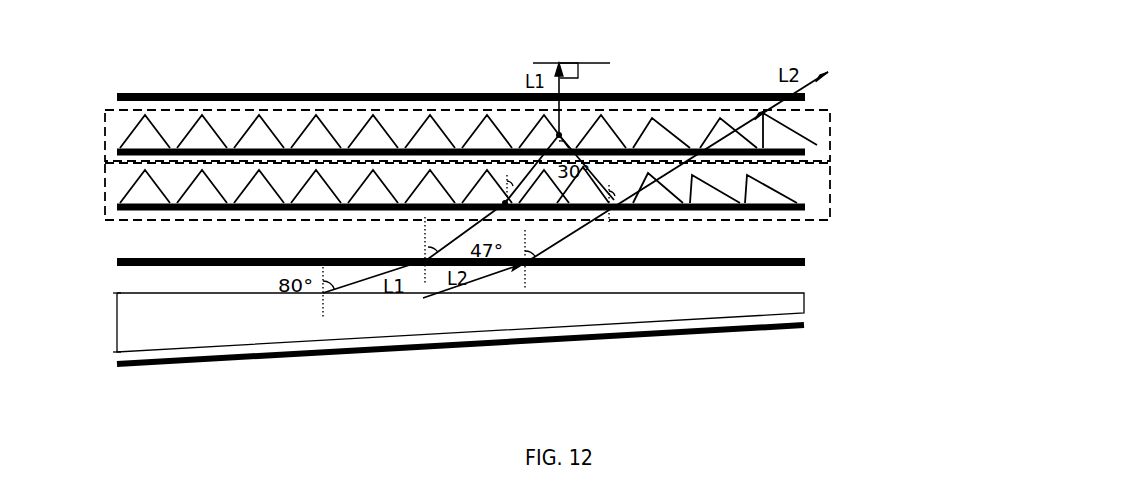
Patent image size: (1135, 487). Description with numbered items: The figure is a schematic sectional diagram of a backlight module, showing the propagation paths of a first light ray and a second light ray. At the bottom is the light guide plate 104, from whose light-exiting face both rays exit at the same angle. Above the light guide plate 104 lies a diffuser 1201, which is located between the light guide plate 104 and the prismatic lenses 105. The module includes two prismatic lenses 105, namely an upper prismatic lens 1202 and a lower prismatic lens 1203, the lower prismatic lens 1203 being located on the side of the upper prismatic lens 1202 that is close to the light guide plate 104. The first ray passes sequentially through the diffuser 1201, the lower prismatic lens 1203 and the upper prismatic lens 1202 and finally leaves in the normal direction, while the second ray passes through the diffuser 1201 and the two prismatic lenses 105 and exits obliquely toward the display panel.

The light guide plate 104 is at (247, 325).
The prismatic lens 105 is at (551, 165).
The diffuser 1201 is at (805, 262).
The upper prismatic lens 1202 is at (830, 139).
The lower prismatic lens 1203 is at (830, 185).